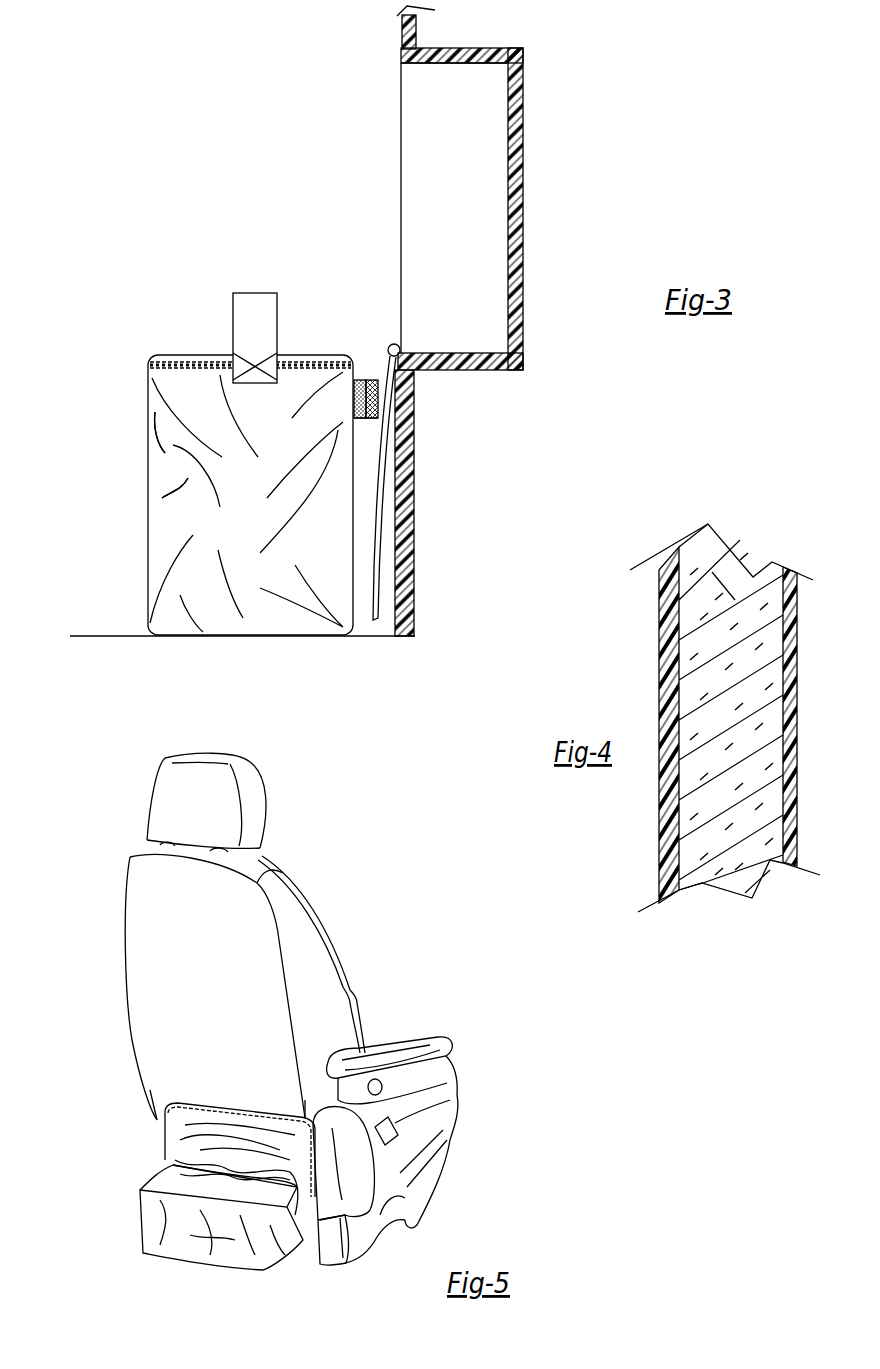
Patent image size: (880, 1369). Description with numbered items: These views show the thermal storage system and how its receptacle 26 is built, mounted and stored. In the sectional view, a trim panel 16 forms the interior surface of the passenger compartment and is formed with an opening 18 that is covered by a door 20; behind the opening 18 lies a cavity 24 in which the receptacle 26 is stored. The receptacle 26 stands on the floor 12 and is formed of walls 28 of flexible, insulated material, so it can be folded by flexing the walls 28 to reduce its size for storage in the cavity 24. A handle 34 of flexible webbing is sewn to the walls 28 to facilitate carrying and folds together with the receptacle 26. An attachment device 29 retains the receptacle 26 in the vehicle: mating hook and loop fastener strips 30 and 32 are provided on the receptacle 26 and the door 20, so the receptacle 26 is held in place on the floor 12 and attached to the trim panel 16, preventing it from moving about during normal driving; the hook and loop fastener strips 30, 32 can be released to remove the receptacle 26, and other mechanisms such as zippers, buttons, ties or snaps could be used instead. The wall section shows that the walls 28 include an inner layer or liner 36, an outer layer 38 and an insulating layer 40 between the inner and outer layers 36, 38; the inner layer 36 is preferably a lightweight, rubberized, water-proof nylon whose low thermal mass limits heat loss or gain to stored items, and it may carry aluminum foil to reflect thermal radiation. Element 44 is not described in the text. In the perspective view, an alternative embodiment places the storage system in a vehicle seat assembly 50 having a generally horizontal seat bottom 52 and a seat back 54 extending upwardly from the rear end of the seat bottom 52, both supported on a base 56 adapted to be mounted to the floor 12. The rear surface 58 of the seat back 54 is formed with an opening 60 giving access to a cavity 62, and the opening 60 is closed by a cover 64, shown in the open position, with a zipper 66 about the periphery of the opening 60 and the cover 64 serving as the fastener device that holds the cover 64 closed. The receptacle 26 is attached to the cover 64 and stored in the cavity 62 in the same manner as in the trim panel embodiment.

In FIG. 3, the floor 12 is at (112, 636).
In FIG. 3, the trim panel 16 is at (401, 42).
In FIG. 3, the opening 18 is at (401, 63).
In FIG. 3, the door 20 is at (415, 428).
In FIG. 3, the cavity 24 is at (440, 113).
In FIG. 3, the receptacle 26 is at (143, 416).
In FIG. 5, the receptacle 26 is at (210, 1232).
In FIG. 3, the walls 28 is at (148, 500).
In FIG. 4, the walls 28 is at (625, 678).
In FIG. 3, the attachment device 29 is at (366, 422).
In FIG. 3, the hook and loop fastener strip 30 is at (358, 380).
In FIG. 3, the hook and loop fastener strip 32 is at (374, 380).
In FIG. 3, the handle 34 is at (240, 293).
In FIG. 4, the inner layer 36 is at (797, 660).
In FIG. 4, the outer layer 38 is at (659, 606).
In FIG. 4, the insulating layer 40 is at (718, 582).
In FIG. 3, the seam stitching 44 is at (178, 362).
In FIG. 5, the vehicle seat assembly 50 is at (363, 918).
In FIG. 5, the seat bottom 52 is at (460, 1090).
In FIG. 5, the seat back 54 is at (310, 873).
In FIG. 5, the base 56 is at (430, 1180).
In FIG. 5, the rear surface 58 is at (210, 995).
In FIG. 5, the opening 60 is at (217, 1112).
In FIG. 5, the cavity 62 is at (273, 1128).
In FIG. 5, the cover 64 is at (340, 1262).
In FIG. 5, the zipper 66 is at (245, 1112).